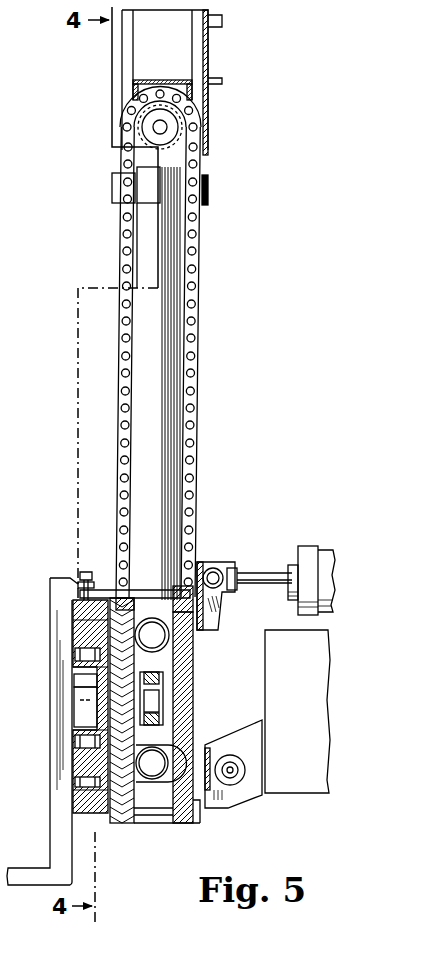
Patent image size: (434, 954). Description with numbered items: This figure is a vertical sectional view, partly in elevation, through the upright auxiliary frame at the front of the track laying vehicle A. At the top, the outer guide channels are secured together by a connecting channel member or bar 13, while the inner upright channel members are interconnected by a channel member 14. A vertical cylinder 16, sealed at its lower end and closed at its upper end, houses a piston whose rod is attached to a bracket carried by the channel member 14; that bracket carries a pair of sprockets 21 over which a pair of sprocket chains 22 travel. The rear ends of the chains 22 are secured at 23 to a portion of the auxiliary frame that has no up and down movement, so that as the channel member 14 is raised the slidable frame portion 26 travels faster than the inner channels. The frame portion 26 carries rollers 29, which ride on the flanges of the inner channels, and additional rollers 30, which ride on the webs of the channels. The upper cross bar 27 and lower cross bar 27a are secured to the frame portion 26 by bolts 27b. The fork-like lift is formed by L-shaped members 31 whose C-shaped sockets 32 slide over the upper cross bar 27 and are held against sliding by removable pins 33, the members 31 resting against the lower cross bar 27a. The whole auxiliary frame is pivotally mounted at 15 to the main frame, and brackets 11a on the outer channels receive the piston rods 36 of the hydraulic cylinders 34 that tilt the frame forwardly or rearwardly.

The connecting channel member or bar 13 is at (210, 48).
The channel member 14 is at (146, 80).
The sprockets 21 is at (195, 147).
The sprocket chains 22 is at (204, 212).
The vertical cylinder 16 is at (155, 330).
The upper cross bar 27 is at (76, 636).
The lower cross bar 27a is at (78, 769).
The bolts 27b is at (80, 656).
The slidable frame portion 26 is at (85, 711).
The C-shaped sockets 32 is at (84, 684).
The removable pins 33 is at (88, 572).
The rollers 29 is at (140, 625).
The additional rollers 30 is at (165, 690).
The chain securing point 23 is at (205, 632).
The brackets 11a is at (215, 575).
The piston rods 36 is at (268, 573).
The hydraulic cylinders 34 is at (326, 560).
The vehicle A is at (305, 797).
The pivot mounting 15 is at (232, 772).
The L-shaped members 31 is at (20, 878).